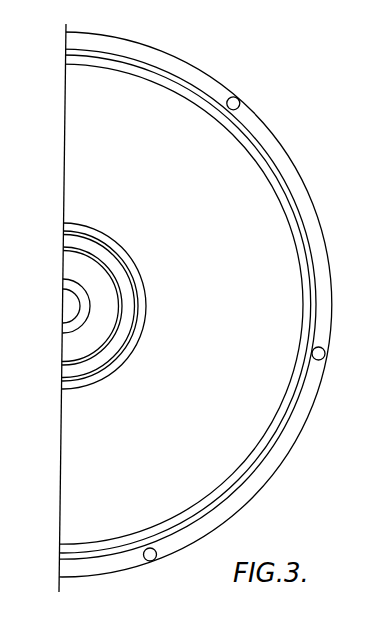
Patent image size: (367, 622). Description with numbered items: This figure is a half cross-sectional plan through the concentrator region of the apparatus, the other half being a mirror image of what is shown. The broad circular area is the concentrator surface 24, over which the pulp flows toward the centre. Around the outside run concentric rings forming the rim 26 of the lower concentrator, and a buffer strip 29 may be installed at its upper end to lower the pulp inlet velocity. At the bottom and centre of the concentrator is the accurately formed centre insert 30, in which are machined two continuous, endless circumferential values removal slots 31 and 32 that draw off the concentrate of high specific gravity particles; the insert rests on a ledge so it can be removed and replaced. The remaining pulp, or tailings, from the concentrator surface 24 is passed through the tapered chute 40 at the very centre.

The concentrator surface 24 is at (208, 314).
The rim 26 is at (305, 246).
The buffer strip 29 is at (305, 269).
The centre insert 30 is at (85, 244).
The values removal slot 31 is at (115, 255).
The values removal slot 32 is at (113, 276).
The tapered chute 40 is at (68, 307).